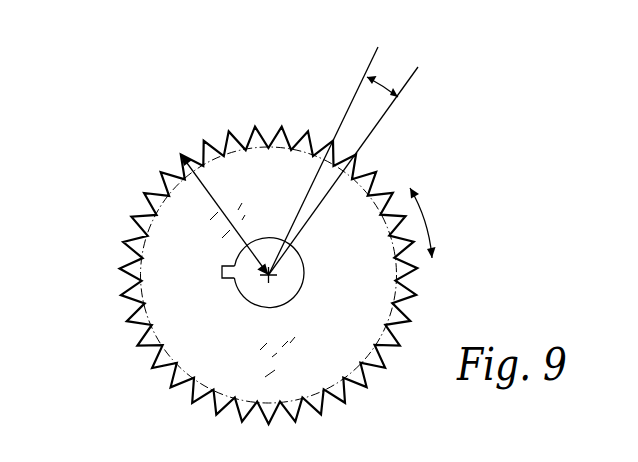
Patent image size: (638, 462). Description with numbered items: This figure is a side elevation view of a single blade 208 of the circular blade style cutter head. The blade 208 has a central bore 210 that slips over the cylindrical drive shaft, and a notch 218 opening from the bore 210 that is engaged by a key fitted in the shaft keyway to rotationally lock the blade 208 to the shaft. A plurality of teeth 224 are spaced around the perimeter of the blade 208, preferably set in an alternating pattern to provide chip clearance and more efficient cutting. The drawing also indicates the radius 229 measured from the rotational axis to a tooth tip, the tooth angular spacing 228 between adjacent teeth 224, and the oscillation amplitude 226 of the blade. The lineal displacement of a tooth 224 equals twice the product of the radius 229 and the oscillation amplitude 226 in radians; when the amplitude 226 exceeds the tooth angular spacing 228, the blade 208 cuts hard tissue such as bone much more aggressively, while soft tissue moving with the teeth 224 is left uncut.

The blade 208 is at (138, 130).
The teeth 224 is at (229, 131).
The central bore 210 is at (248, 306).
The notch 218 is at (222, 270).
The radius 229 is at (208, 197).
The tooth angular spacing 228 is at (386, 82).
The oscillation amplitude 226 is at (425, 215).